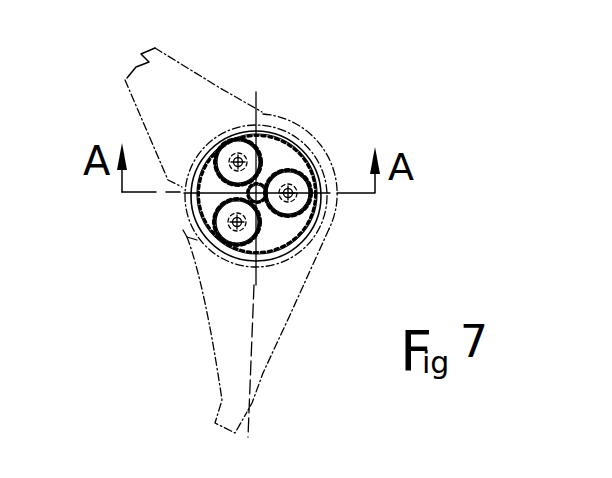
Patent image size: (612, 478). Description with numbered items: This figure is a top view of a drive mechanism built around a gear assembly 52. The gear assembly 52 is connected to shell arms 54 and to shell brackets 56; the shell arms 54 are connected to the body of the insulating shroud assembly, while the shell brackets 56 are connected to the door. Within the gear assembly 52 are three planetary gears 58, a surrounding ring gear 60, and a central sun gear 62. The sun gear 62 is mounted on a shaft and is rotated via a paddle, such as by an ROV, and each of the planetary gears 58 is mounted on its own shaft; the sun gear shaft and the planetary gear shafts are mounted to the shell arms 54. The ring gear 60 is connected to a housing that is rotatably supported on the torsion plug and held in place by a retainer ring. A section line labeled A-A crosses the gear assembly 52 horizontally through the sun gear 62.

The gear assembly 52 is at (365, 220).
The shell arms 54 is at (283, 293).
The shell brackets 56 is at (192, 100).
The planetary gears 58 is at (257, 155).
The ring gear 60 is at (195, 212).
The sun gear 62 is at (259, 195).